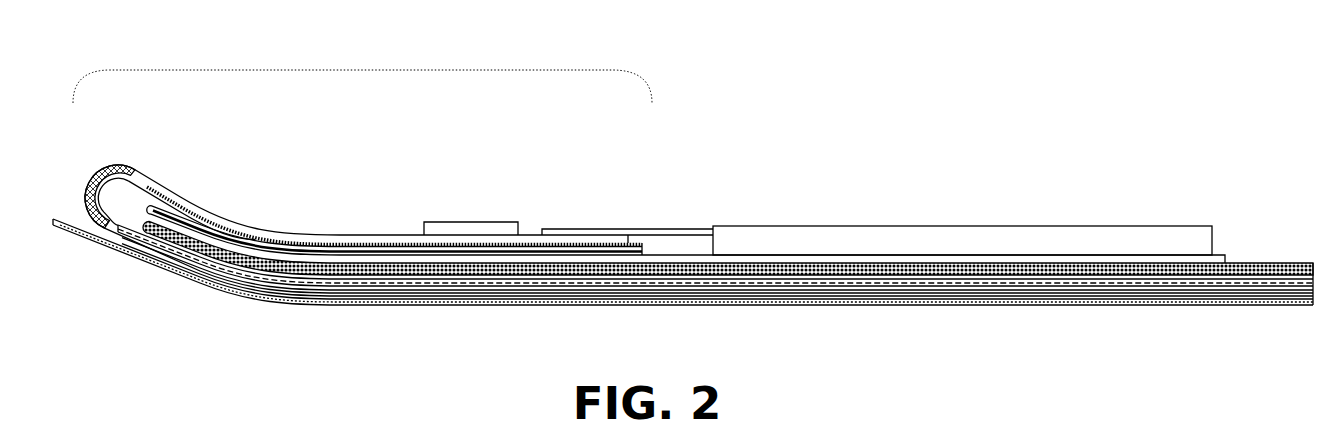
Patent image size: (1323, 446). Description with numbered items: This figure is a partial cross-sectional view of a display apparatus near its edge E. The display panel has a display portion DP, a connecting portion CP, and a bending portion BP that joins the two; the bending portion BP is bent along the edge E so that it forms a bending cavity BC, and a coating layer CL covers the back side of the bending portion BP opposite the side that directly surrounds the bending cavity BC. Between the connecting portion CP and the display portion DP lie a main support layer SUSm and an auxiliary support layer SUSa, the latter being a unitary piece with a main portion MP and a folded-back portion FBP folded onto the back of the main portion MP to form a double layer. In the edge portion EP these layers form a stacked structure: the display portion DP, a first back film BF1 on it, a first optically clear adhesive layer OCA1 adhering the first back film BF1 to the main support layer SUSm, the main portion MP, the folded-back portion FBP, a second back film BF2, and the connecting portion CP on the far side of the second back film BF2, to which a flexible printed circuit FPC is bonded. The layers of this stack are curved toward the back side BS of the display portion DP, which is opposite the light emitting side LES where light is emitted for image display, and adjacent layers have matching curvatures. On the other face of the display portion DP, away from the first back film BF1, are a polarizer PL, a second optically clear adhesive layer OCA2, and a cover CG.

The edge E is at (56, 151).
The edge portion EP is at (362, 62).
The back side BS is at (612, 177).
The light emitting side LES is at (1041, 302).
The flexible printed circuit FPC is at (962, 240).
The coating layer CL is at (88, 190).
The bending portion BP is at (99, 176).
The bending cavity BC is at (176, 208).
The connecting portion CP is at (180, 200).
The second back film BF2 is at (337, 238).
The auxiliary support layer SUSa is at (218, 180).
The folded-back portion FBP is at (213, 228).
The main portion MP is at (245, 248).
The main support layer SUSm is at (290, 265).
The first optically clear adhesive layer OCA1 is at (337, 278).
The display portion DP is at (252, 278).
The first back film BF1 is at (288, 280).
The polarizer PL is at (223, 275).
The second optically clear adhesive layer OCA2 is at (172, 262).
The cover CG is at (157, 263).